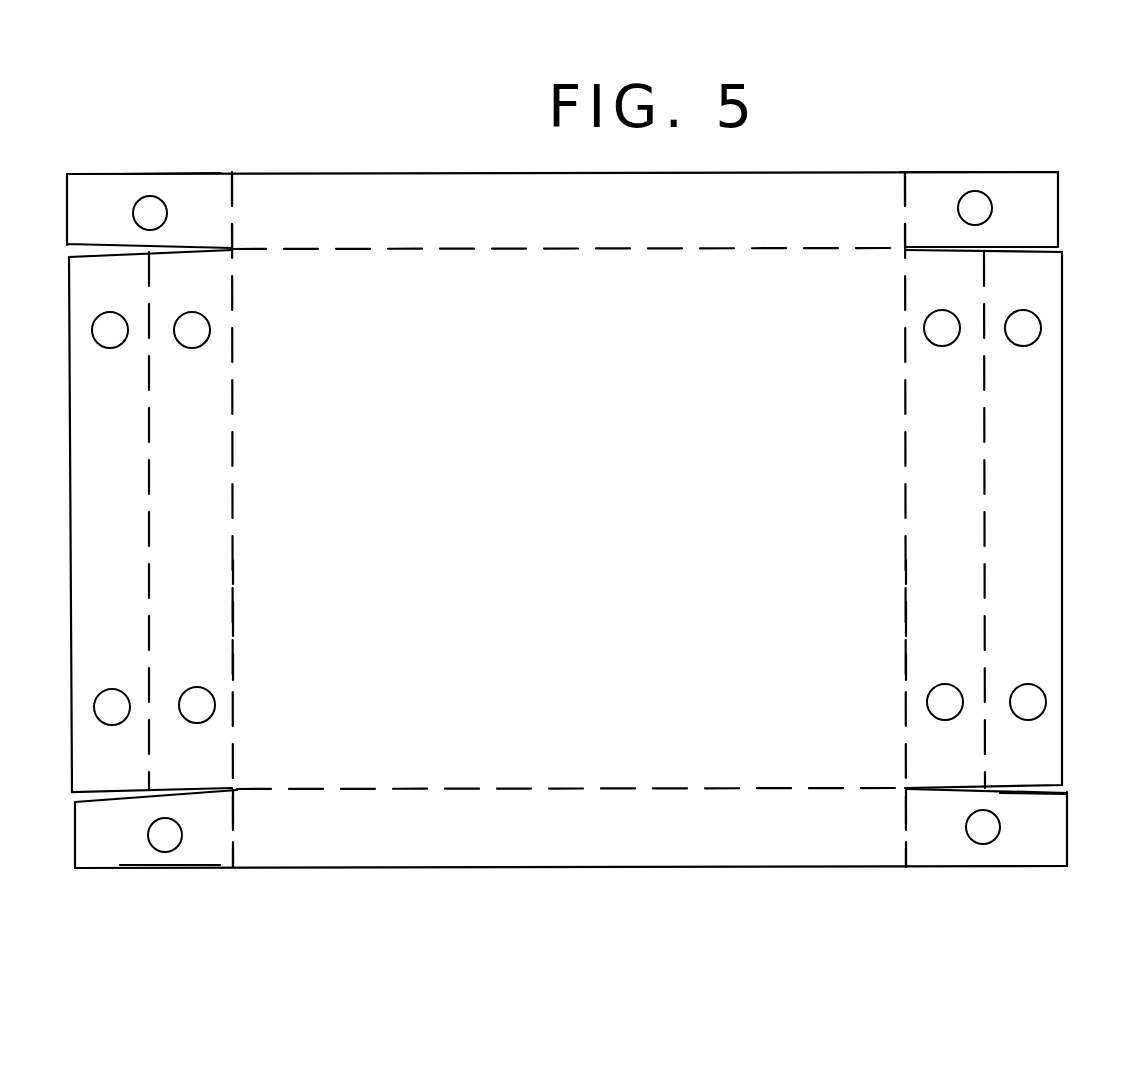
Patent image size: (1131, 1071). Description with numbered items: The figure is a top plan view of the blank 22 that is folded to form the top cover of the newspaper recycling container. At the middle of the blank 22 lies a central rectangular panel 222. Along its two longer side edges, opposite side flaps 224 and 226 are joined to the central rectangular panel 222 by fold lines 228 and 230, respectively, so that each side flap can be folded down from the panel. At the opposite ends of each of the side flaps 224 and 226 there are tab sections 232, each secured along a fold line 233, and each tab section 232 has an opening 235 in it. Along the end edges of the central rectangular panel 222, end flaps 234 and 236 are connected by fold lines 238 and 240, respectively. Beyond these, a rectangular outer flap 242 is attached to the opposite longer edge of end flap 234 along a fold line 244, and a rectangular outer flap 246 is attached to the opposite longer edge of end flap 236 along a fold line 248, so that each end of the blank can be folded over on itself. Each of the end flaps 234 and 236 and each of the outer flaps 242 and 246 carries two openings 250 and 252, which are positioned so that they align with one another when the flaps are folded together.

The blank 22 is at (310, 108).
The central rectangular panel 222 is at (527, 530).
The side flap 224 is at (382, 190).
The side flap 226 is at (295, 845).
The fold line 228 is at (391, 258).
The fold line 230 is at (370, 793).
The tab section 232 is at (173, 188).
The fold line 233 is at (232, 208).
The end flap 234 is at (210, 515).
The opening 235 is at (148, 198).
The end flap 236 is at (912, 490).
The fold line 238 is at (240, 620).
The fold line 240 is at (903, 610).
The rectangular outer flap 242 is at (92, 265).
The fold line 244 is at (148, 437).
The rectangular outer flap 246 is at (1050, 518).
The fold line 248 is at (985, 468).
The opening 250 is at (107, 346).
The opening 252 is at (107, 690).